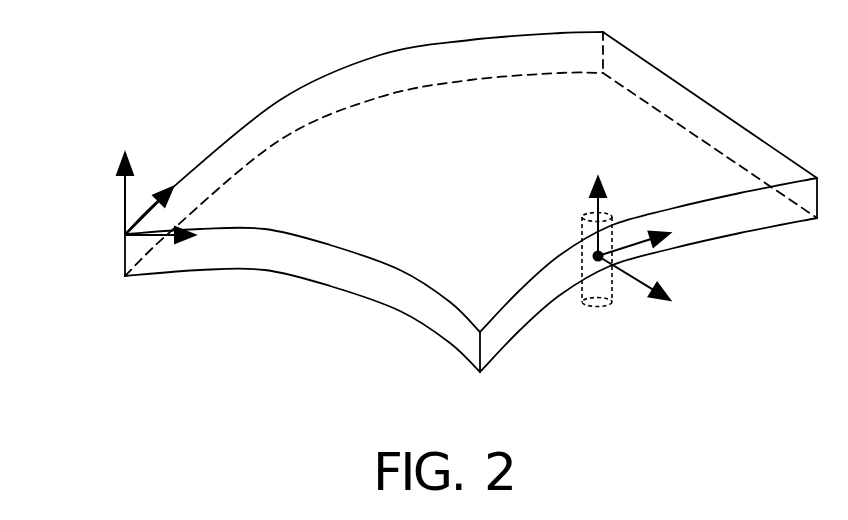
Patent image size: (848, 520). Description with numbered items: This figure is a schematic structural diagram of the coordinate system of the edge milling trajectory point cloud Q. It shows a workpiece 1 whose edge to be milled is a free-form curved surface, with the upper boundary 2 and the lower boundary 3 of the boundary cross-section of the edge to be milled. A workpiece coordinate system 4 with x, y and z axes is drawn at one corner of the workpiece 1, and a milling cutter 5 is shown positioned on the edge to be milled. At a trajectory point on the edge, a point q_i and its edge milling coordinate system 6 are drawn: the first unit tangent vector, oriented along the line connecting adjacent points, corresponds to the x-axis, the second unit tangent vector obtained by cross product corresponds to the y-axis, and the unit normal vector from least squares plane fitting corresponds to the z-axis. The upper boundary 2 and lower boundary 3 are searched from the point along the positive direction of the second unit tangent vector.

The workpiece with free-form curved surface 1 is at (471, 202).
The upper boundary 2 is at (471, 255).
The lower boundary 3 is at (471, 295).
The workpiece coordinate system 4 is at (115, 209).
The milling cutter 5 is at (599, 293).
The cutter location point and local coordinate frame 6 is at (647, 242).